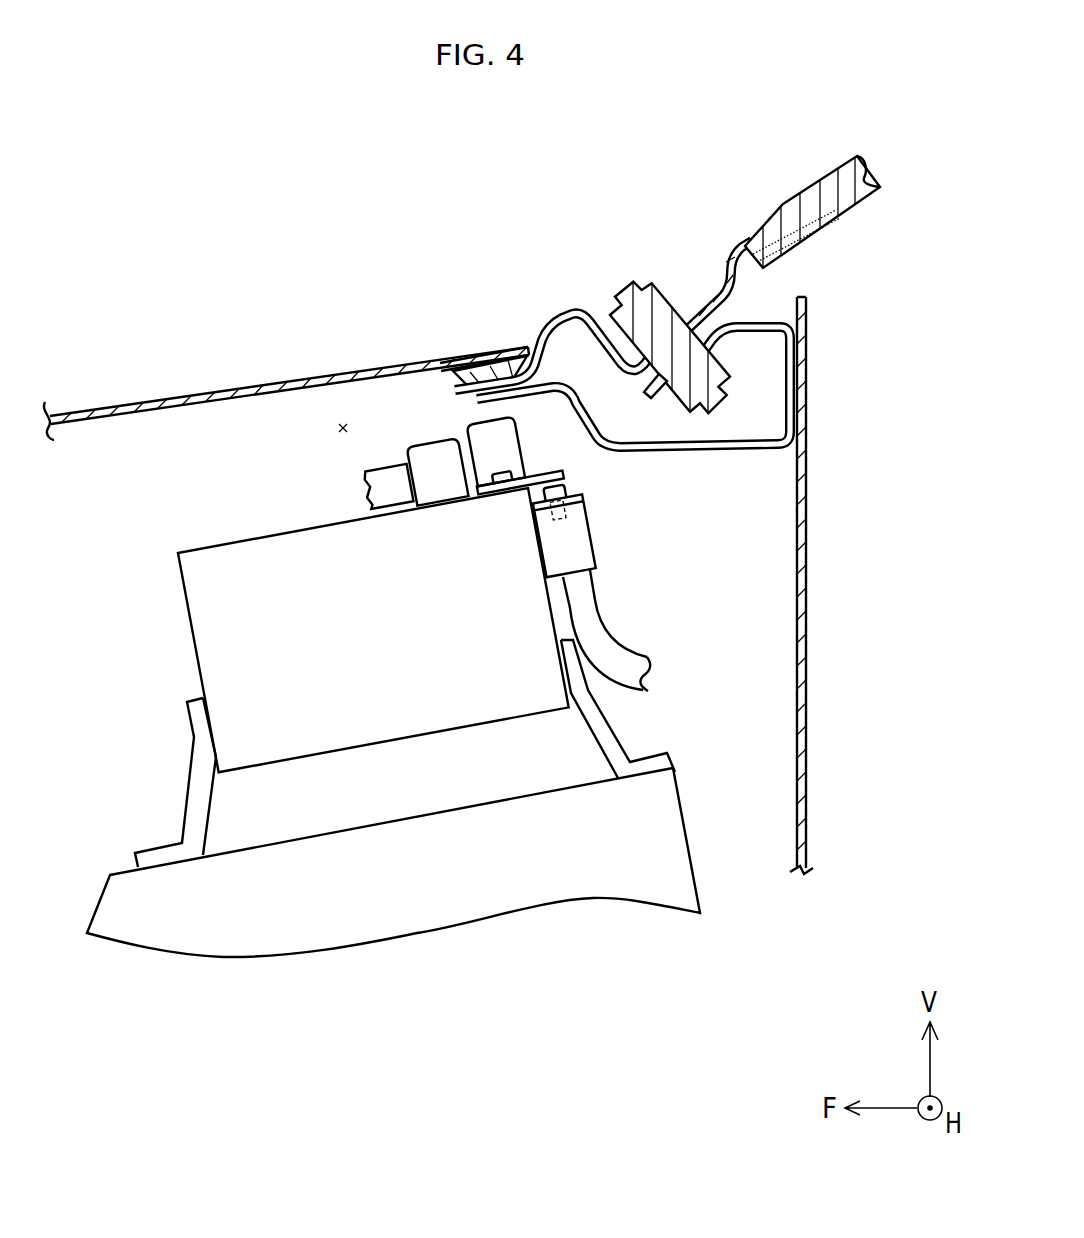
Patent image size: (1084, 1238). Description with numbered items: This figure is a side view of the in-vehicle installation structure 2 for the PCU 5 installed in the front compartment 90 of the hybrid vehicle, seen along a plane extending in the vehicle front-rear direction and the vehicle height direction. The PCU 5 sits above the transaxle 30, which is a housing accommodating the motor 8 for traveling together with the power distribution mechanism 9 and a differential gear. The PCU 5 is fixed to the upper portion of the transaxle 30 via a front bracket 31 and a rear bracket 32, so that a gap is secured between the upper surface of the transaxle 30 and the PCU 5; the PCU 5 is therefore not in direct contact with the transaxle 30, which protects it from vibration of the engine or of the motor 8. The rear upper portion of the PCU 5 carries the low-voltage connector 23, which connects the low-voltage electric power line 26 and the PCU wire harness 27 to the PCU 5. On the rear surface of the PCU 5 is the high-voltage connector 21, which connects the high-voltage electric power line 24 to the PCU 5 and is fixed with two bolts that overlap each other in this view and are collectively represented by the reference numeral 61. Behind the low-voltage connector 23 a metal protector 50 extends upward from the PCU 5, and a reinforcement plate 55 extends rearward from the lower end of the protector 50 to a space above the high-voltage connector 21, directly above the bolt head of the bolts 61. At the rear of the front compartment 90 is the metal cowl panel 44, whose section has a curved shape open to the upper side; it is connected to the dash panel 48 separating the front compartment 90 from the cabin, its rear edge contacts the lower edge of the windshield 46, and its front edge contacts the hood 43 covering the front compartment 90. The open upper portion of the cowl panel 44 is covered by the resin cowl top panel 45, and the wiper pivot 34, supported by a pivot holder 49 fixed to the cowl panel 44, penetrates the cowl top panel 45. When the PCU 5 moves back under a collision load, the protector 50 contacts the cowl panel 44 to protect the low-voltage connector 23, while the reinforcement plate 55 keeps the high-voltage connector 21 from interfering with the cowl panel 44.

The in-vehicle installation structure 2 is at (205, 263).
The PCU 5 is at (200, 623).
The motor 8 is at (393, 895).
The power distribution mechanism 9 is at (442, 933).
The high-voltage connector 21 is at (580, 549).
The low-voltage connector 23 is at (457, 414).
The high-voltage electric power line 24 is at (592, 607).
The low-voltage electric power line 26 is at (297, 403).
The PCU wire harness 27 is at (366, 478).
The transaxle 30 is at (393, 895).
The front bracket 31 is at (194, 805).
The rear bracket 32 is at (618, 754).
The wiper pivot 34 is at (644, 289).
The hood 43 is at (474, 352).
The cowl panel 44 is at (574, 396).
The cowl top panel 45 is at (695, 322).
The windshield 46 is at (816, 200).
The dash panel 48 is at (798, 622).
The pivot holder 49 is at (763, 322).
The protector 50 is at (427, 450).
The reinforcement plate 55 is at (562, 472).
The bolts 61 is at (568, 492).
The front compartment 90 is at (340, 425).